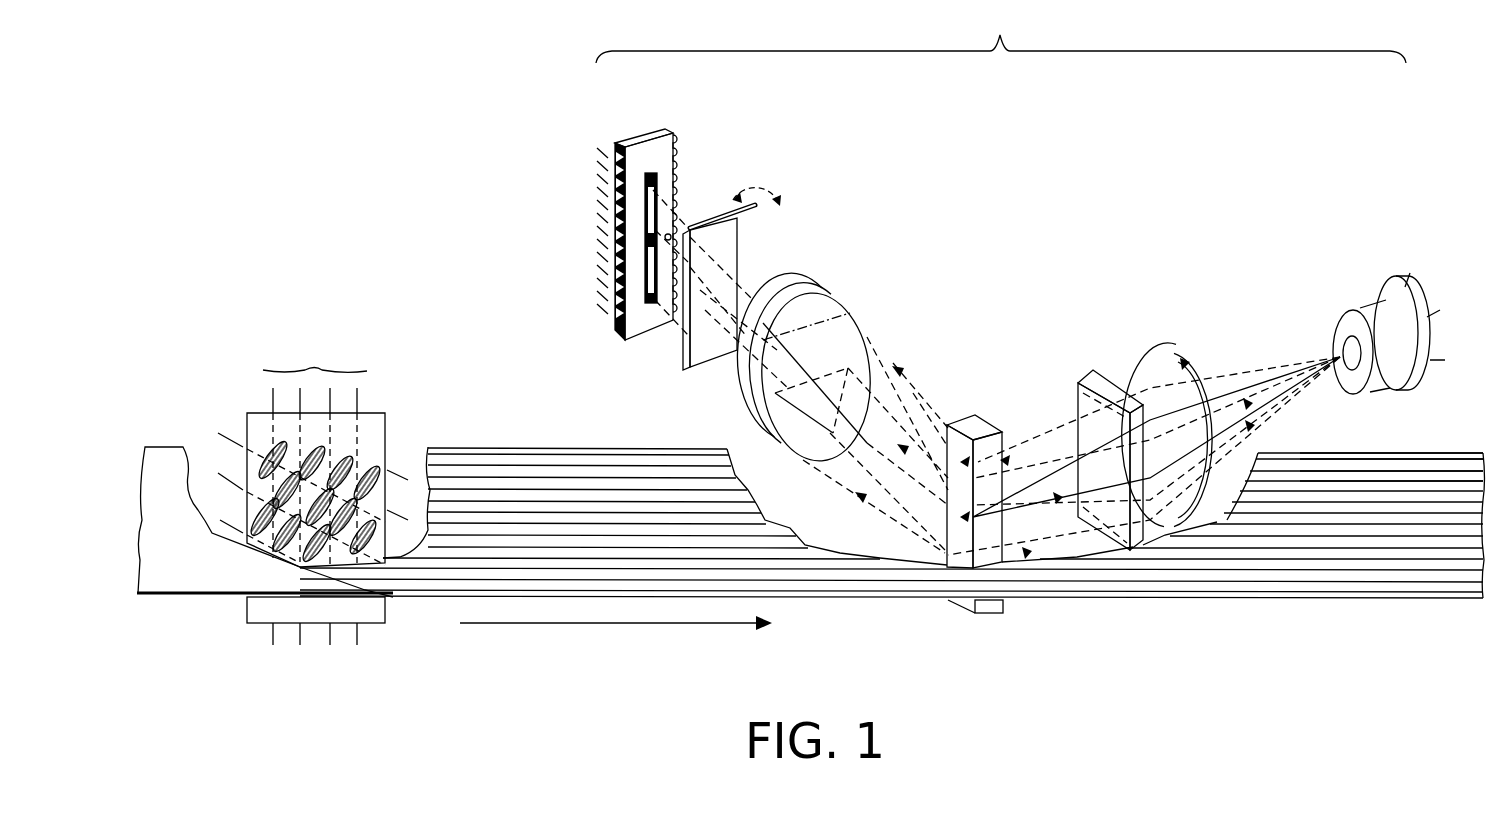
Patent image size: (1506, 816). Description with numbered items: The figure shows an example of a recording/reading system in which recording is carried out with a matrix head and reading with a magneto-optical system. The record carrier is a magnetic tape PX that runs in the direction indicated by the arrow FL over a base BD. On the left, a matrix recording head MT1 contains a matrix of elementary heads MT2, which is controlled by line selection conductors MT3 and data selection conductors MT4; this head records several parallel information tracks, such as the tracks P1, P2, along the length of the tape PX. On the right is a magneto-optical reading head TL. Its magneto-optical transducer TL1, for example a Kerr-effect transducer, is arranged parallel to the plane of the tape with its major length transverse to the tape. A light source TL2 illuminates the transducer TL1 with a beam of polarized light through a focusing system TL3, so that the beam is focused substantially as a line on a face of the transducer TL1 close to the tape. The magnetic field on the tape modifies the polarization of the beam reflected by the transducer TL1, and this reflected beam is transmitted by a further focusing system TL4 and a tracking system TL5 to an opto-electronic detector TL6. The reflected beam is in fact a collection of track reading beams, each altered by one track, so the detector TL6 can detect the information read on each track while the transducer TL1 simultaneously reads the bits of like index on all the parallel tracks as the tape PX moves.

The magneto-optical reading head TL is at (1001, 35).
The magneto-optical transducer TL1 is at (987, 606).
The light source TL2 is at (1353, 308).
The focusing system TL3 is at (1177, 318).
The focusing system TL4 is at (848, 305).
The tracking system TL5 is at (740, 234).
The opto-electronic detector TL6 is at (673, 132).
The magnetic tape PX is at (1437, 588).
The information track P1 is at (1455, 465).
The information track P2 is at (1413, 477).
The tape running direction arrow FL is at (616, 635).
The base / support BD is at (193, 573).
The matrix recording head MT1 is at (375, 423).
The matrix of elementary heads MT2 is at (343, 463).
The line selection conductors MT3 is at (315, 373).
The data selection conductors MT4 is at (200, 473).